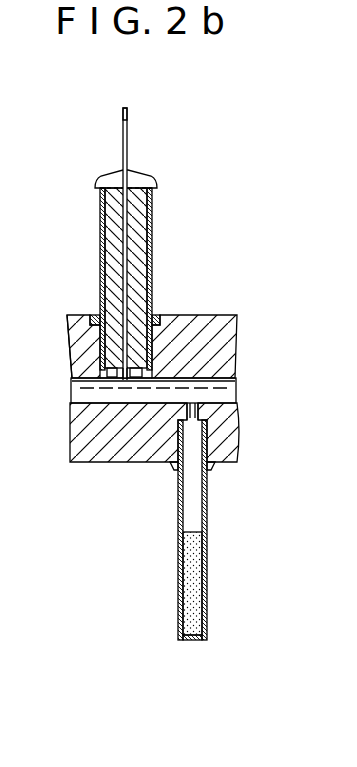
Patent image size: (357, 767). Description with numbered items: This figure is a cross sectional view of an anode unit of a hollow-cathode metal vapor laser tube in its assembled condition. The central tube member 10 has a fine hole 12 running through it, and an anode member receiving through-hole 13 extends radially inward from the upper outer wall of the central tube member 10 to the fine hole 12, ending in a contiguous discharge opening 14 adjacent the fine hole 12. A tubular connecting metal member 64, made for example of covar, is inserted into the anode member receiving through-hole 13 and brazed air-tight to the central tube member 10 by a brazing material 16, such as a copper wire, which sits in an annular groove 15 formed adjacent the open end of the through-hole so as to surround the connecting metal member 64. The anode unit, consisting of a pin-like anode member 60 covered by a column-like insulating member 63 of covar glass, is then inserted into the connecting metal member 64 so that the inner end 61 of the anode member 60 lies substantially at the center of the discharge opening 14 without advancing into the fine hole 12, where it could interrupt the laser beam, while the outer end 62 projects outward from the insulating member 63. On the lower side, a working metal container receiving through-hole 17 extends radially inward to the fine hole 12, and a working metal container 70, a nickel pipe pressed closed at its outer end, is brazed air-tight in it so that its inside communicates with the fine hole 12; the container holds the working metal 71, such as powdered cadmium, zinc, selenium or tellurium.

The central tube member 10 is at (238, 335).
The fine hole 12 is at (238, 395).
The anode member receiving through-hole 13 is at (100, 338).
The discharge opening 14 is at (100, 375).
The annular groove 15 is at (89, 318).
The brazing material 16 is at (158, 316).
The working metal container receiving through-hole 17 is at (214, 466).
The anode member 60 is at (128, 140).
The inner end 61 is at (120, 373).
The outer end 62 is at (128, 109).
The insulating member 63 is at (140, 238).
The connecting metal member 64 is at (148, 270).
The working metal container 70 is at (178, 570).
The working metal 71 is at (195, 582).